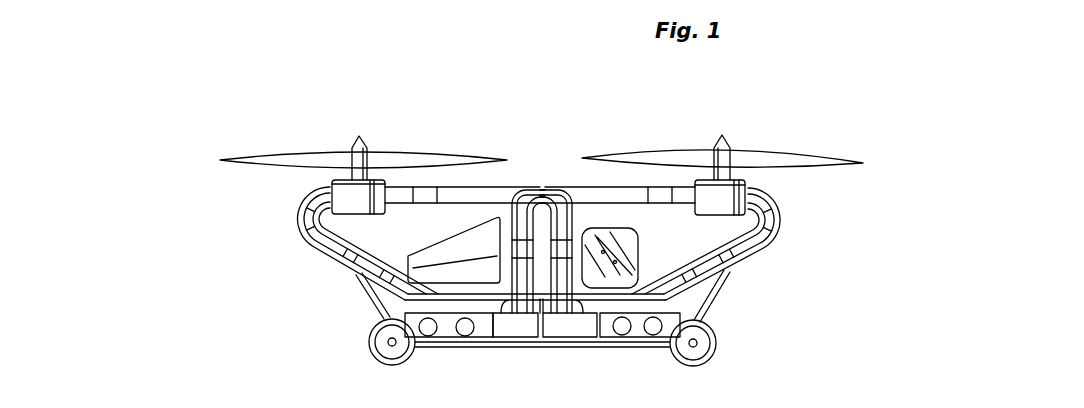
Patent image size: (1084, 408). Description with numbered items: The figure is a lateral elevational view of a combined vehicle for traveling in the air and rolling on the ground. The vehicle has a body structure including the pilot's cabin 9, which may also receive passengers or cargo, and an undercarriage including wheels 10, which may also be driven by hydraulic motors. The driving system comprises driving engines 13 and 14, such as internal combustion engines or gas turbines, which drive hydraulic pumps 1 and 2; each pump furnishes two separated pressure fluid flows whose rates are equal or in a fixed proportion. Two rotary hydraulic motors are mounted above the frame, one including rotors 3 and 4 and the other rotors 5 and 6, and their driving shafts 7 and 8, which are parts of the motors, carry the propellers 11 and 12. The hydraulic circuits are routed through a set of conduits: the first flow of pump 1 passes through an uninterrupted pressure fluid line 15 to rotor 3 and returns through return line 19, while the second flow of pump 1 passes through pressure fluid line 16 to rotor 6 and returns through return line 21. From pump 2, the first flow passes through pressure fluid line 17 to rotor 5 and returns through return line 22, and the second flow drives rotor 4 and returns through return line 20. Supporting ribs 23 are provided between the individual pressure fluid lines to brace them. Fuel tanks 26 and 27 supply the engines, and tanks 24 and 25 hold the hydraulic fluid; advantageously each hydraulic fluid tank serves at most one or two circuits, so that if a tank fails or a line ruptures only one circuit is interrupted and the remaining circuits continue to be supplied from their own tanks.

The hydraulic pump 1 is at (517, 325).
The hydraulic pump 2 is at (570, 327).
The rotor 3 is at (370, 208).
The rotor 4 is at (343, 205).
The rotor 5 is at (704, 205).
The rotor 6 is at (721, 204).
The driving shaft 7 is at (358, 138).
The driving shaft 8 is at (723, 137).
The pilot's cabin 9 is at (455, 272).
The wheels 10 is at (375, 353).
The propeller 11 is at (403, 158).
The propeller 12 is at (784, 158).
The driving engine 13 is at (467, 328).
The driving engine 14 is at (653, 327).
The pressure fluid line 15 is at (478, 190).
The pressure fluid line 16 is at (506, 203).
The pressure fluid line 17 is at (632, 187).
The return line 19 is at (316, 247).
The return line 20 is at (353, 262).
The return line 21 is at (766, 242).
The return line 22 is at (750, 263).
The supporting ribs 23 is at (425, 197).
The hydraulic fluid tank 24 is at (593, 236).
The hydraulic fluid tank 25 is at (633, 272).
The fuel tank 26 is at (610, 246).
The fuel tank 27 is at (627, 260).